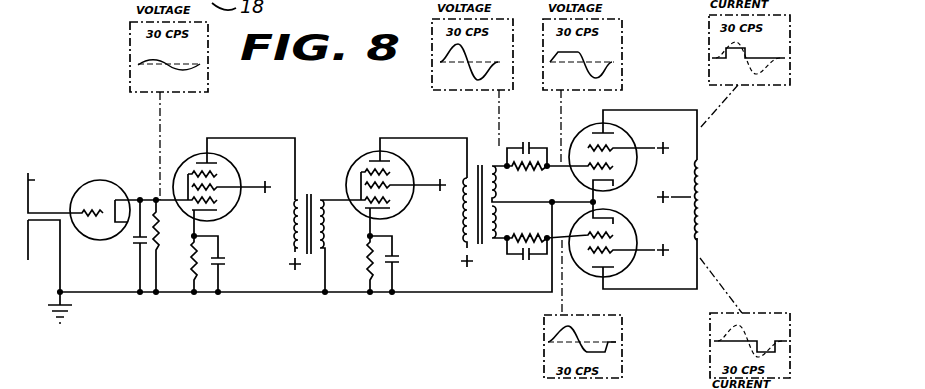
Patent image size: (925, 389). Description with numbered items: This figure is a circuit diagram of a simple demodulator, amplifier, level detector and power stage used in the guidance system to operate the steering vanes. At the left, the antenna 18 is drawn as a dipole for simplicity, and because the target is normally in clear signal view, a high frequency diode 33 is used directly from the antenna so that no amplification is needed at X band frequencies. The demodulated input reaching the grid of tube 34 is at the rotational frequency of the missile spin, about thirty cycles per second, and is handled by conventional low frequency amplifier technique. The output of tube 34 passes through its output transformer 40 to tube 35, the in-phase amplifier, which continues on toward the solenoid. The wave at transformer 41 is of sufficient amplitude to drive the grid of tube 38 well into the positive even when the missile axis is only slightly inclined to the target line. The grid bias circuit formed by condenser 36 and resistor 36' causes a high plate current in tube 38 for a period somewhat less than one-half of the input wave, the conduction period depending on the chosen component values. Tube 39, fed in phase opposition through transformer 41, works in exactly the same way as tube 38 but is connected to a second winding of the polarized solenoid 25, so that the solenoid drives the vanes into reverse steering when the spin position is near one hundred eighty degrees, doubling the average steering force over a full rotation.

The antenna 18 is at (35, 180).
The high frequency diode 33 is at (128, 168).
The tube 34 is at (231, 164).
The output transformer 40 is at (312, 192).
The tube 35 is at (406, 160).
The transformer 41 is at (484, 166).
The condenser 36 is at (523, 204).
The resistor 36' is at (527, 202).
The tube 38 is at (626, 134).
The tube 39 is at (626, 266).
The polarized solenoid 25 is at (716, 218).